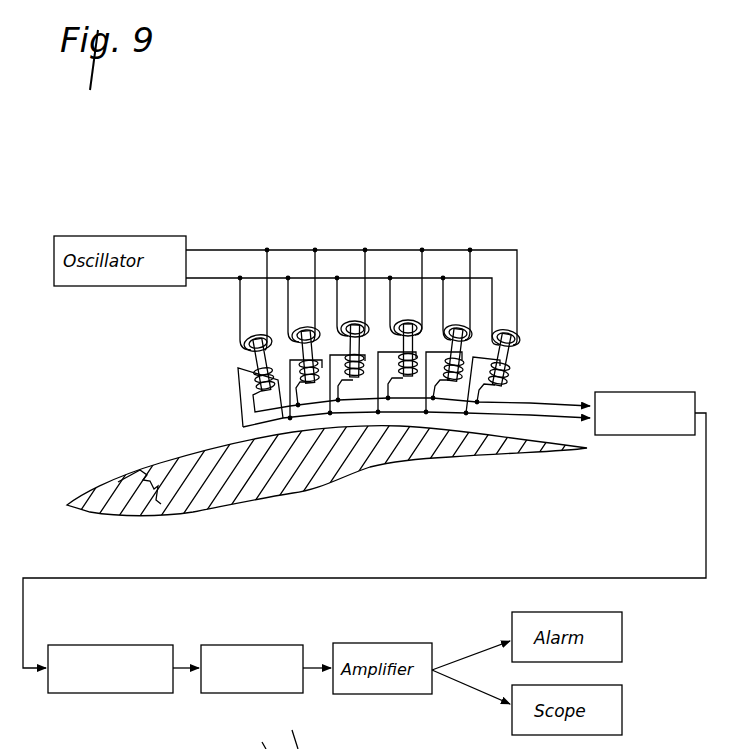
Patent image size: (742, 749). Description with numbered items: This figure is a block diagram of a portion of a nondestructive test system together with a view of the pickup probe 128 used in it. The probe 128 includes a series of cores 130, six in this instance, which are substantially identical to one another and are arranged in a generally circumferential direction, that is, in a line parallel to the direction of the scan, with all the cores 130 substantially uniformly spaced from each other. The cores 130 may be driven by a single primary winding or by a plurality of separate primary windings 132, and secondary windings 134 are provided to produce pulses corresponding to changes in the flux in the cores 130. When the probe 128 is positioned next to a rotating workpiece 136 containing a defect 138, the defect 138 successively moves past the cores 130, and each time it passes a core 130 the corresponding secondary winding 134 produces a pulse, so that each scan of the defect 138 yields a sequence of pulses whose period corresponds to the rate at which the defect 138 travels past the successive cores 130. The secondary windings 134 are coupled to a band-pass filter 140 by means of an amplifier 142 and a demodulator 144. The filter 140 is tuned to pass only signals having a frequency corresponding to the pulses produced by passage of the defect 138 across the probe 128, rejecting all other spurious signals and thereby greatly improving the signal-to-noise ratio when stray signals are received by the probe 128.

The probe 128 is at (190, 363).
The cores 130 is at (310, 328).
The primary windings 132 is at (406, 326).
The secondary windings 134 is at (260, 381).
The workpiece 136 is at (262, 486).
The defect 138 is at (118, 482).
The band-pass filter 140 is at (265, 642).
The amplifier 142 is at (672, 393).
The demodulator 144 is at (113, 647).